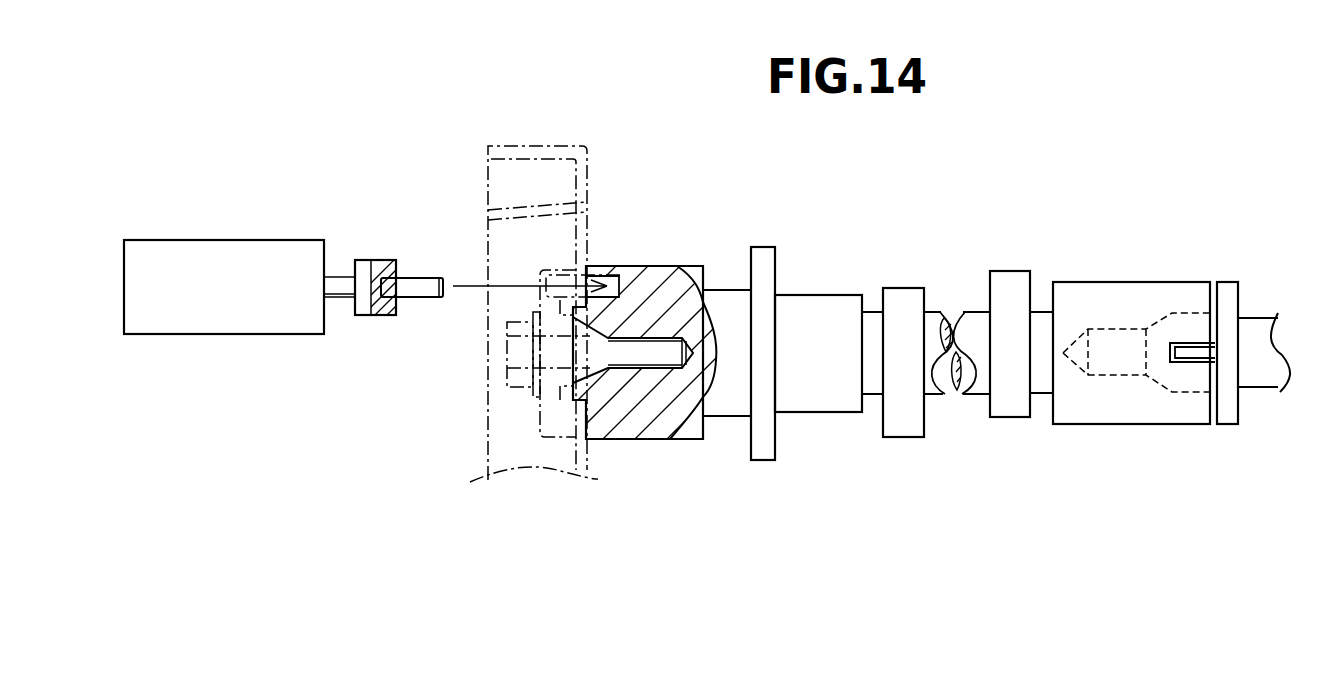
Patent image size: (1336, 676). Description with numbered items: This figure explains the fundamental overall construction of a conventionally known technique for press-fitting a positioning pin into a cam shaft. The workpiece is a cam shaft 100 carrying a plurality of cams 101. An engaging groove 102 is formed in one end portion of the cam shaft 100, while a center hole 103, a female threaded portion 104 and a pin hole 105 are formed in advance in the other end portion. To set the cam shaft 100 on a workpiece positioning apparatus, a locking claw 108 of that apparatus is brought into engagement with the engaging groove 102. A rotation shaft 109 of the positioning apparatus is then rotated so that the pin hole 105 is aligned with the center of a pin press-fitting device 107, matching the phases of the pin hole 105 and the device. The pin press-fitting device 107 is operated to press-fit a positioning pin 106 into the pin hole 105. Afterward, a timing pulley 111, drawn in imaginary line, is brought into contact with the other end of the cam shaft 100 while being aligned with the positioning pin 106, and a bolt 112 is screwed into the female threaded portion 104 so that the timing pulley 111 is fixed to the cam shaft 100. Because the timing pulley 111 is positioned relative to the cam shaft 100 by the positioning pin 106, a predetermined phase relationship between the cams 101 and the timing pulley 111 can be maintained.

The cam shaft 100 is at (940, 436).
The cams 101 is at (1003, 271).
The engaging groove 102 is at (1193, 346).
The center hole 103 is at (585, 372).
The female threaded portion 104 is at (641, 355).
The pin hole 105 is at (634, 272).
The positioning pin 106 is at (420, 260).
The pin press-fitting device 107 is at (223, 240).
The locking claw 108 is at (1197, 355).
The rotation shaft 109 is at (1253, 370).
The timing pulley 111 is at (538, 146).
The bolt 112 is at (510, 352).